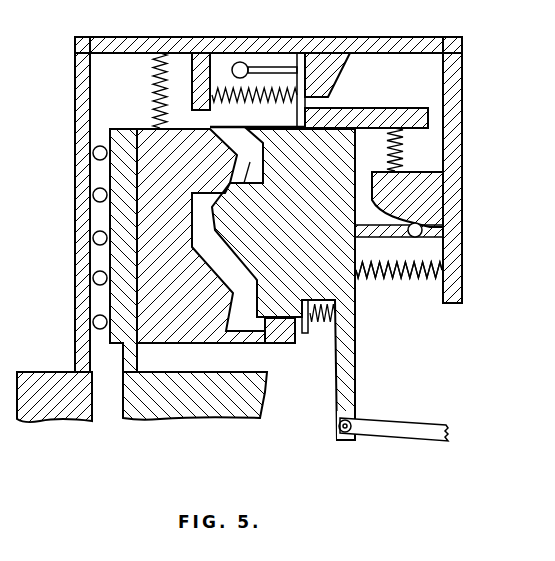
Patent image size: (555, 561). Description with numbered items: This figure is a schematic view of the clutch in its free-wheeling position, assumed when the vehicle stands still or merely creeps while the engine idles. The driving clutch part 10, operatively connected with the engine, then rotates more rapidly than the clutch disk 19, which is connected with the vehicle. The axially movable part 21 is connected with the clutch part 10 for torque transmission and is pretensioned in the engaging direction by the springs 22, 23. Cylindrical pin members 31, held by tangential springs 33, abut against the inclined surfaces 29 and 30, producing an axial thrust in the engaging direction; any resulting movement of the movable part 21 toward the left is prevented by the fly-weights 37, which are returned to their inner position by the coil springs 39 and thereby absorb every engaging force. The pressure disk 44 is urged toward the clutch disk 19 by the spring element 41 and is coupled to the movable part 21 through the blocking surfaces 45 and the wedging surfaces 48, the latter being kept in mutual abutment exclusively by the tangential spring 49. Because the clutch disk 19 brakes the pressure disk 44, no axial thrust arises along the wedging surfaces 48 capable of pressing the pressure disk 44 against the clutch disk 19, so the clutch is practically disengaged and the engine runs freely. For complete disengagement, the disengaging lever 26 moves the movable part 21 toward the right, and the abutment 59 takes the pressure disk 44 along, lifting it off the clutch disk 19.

The driving clutch part 10 is at (82, 165).
The clutch disk 19 is at (120, 256).
The axially movable part 21 is at (366, 110).
The spring 22 is at (410, 277).
The spring 23 is at (399, 285).
The disengaging lever 26 is at (393, 428).
The inclined surface 29 is at (450, 240).
The inclined surface 30 is at (368, 238).
The cylindrical pin member 31 is at (417, 238).
The tangential spring 33 is at (403, 155).
The fly-weight 37 is at (240, 62).
The coil spring 39 is at (266, 92).
The spring element 41 is at (318, 325).
The pressure disk 44 is at (170, 346).
The blocking surface 45 is at (232, 256).
The wedging surface 48 is at (238, 171).
The tangential spring 49 is at (160, 95).
The abutment 59 is at (259, 344).